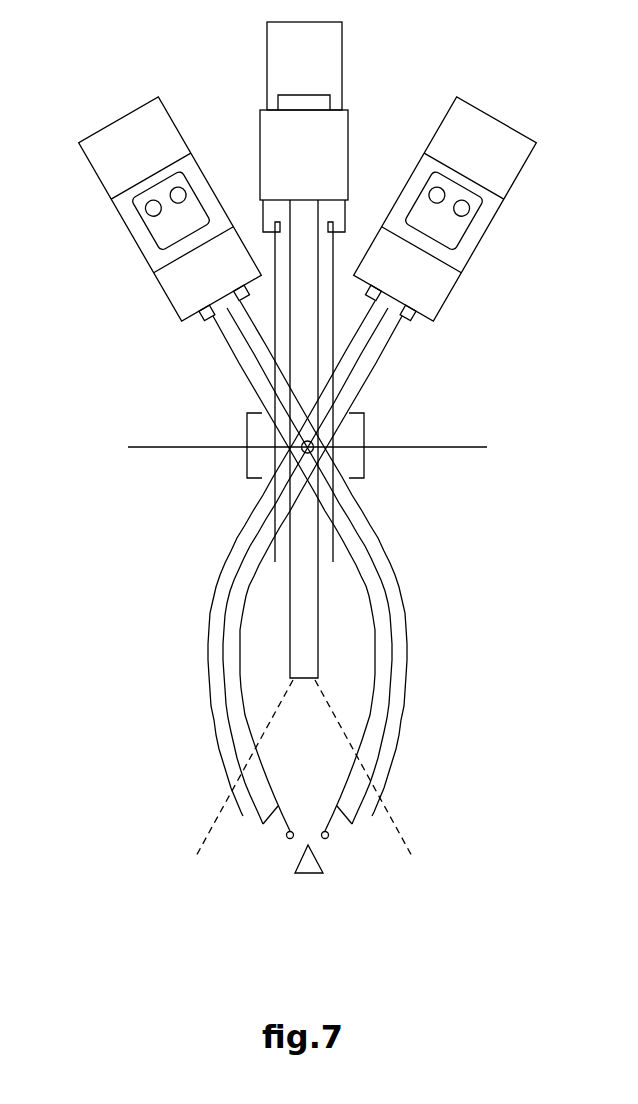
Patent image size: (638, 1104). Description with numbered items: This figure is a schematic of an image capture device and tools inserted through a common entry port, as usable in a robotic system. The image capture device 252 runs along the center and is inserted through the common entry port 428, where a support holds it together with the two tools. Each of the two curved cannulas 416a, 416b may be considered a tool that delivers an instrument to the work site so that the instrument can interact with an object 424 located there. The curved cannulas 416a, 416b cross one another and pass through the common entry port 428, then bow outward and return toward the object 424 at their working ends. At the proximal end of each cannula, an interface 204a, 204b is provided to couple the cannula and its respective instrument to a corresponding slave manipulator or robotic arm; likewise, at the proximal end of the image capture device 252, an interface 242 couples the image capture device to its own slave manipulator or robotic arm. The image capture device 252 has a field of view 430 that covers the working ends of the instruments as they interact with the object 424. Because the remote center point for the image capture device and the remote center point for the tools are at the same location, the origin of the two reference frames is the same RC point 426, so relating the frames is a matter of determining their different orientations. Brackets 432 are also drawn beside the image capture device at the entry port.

The interface 242 is at (345, 34).
The image capture device 252 is at (334, 318).
The interface 204a is at (97, 168).
The interface 204b is at (536, 163).
The curved cannula 416a is at (403, 592).
The curved cannula 416b is at (212, 597).
The RC point 426 is at (302, 455).
The common entry port 428 is at (370, 443).
The guide brackets 432 is at (366, 466).
The field of view 430 is at (390, 821).
The object 424 is at (310, 875).